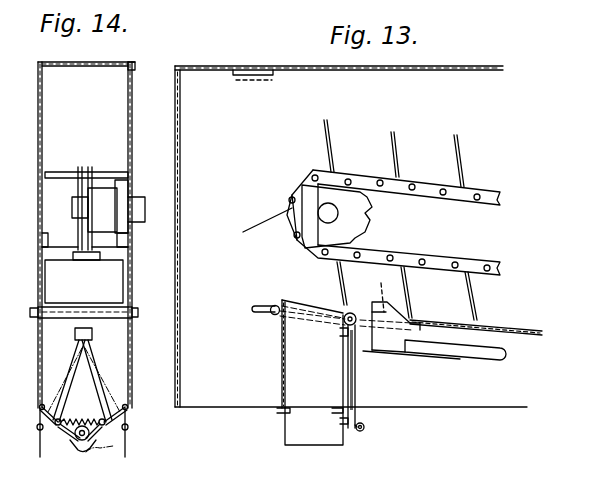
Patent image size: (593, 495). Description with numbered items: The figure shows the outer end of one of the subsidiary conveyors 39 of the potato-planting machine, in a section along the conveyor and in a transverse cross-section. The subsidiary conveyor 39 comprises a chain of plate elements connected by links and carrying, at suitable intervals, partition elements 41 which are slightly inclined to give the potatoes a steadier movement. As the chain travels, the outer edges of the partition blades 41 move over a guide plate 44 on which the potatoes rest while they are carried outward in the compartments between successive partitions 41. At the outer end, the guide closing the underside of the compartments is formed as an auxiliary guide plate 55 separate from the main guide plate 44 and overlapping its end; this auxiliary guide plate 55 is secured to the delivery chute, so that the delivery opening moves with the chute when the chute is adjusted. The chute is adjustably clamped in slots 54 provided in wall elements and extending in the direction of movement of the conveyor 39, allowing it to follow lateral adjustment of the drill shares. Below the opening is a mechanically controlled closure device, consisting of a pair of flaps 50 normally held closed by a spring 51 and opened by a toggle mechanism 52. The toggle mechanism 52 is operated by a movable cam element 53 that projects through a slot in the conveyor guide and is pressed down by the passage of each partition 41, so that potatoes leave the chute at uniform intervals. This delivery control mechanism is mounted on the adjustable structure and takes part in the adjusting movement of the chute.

In FIG. 13, the subsidiary conveyor 39 is at (470, 203).
In FIG. 14, the partition element 41 is at (115, 285).
In FIG. 13, the partition element 41 is at (380, 292).
In FIG. 13, the guide plate 44 is at (498, 328).
In FIG. 14, the flap 50 is at (90, 455).
In FIG. 13, the flap 50 is at (343, 442).
In FIG. 14, the spring 51 is at (83, 420).
In FIG. 13, the spring 51 is at (364, 427).
In FIG. 14, the toggle mechanism 52 is at (93, 368).
In FIG. 13, the toggle mechanism 52 is at (356, 378).
In FIG. 13, the cam element 53 is at (397, 338).
In FIG. 13, the slot 54 is at (270, 314).
In FIG. 13, the auxiliary guide plate 55 is at (427, 320).